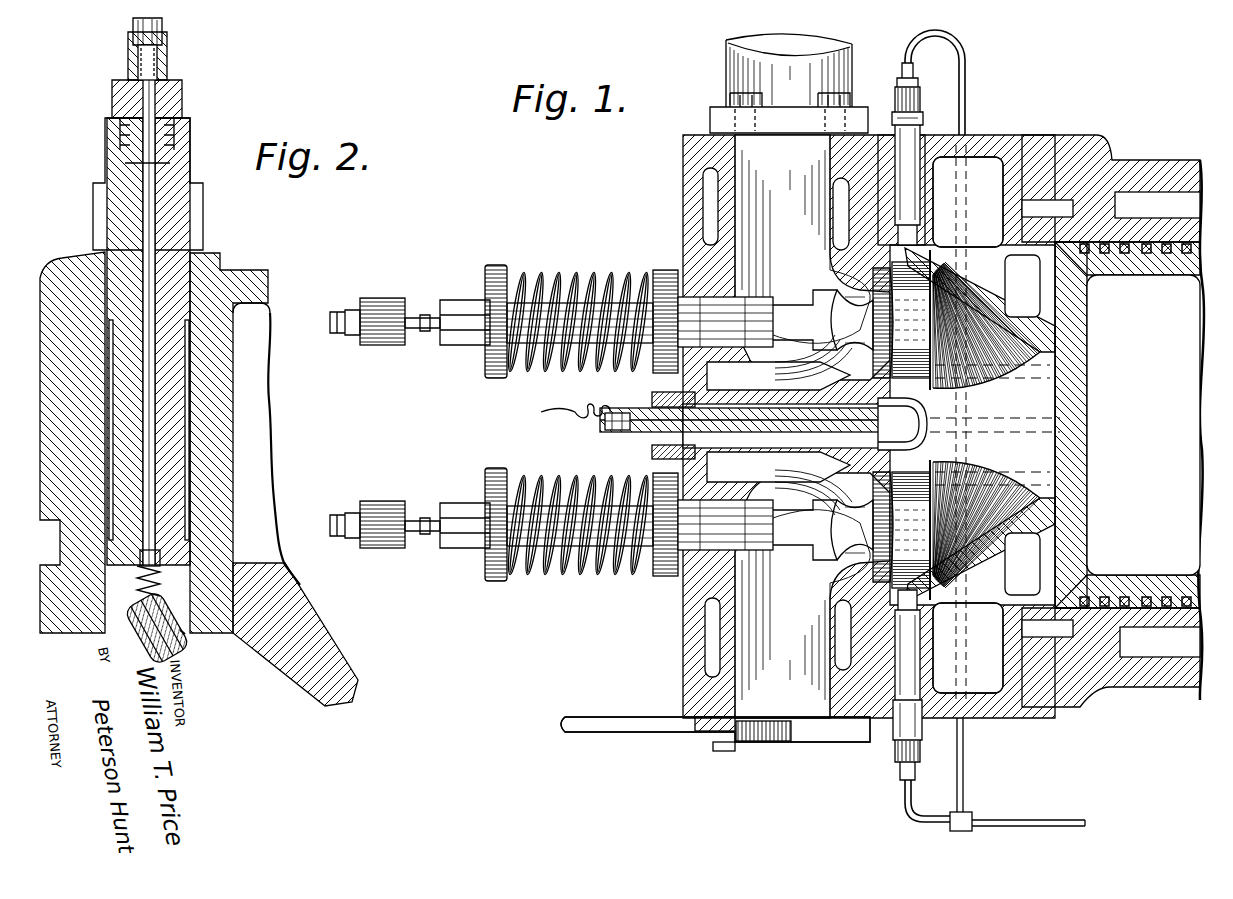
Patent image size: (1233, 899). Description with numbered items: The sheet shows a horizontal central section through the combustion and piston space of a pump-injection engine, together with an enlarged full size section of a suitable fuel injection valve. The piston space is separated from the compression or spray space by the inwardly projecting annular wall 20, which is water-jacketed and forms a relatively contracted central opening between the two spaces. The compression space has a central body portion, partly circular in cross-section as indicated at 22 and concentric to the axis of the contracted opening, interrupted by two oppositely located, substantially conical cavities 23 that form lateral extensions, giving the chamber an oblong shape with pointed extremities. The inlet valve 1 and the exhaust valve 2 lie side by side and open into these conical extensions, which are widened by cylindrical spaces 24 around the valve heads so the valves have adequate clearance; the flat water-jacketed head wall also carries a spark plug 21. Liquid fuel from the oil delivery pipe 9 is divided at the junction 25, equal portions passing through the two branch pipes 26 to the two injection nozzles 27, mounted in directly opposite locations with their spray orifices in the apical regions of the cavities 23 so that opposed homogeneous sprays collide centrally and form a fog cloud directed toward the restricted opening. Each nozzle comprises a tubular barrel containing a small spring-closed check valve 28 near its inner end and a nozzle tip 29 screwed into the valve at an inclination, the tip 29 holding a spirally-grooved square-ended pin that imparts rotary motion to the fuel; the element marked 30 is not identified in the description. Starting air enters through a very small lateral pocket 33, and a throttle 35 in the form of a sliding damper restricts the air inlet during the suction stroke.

In FIG. 1, the inlet valve 1 is at (657, 575).
In FIG. 1, the exhaust valve 2 is at (590, 275).
In FIG. 1, the oil delivery pipe 9 is at (1065, 820).
In FIG. 1, the inwardly projecting annular wall 20 is at (1050, 490).
In FIG. 1, the spark plug 21 is at (630, 422).
In FIG. 1, the central or body portion of the compression space 22 is at (1020, 415).
In FIG. 1, the conical cavities 23 is at (955, 268).
In FIG. 1, the cylindrical spaces 24 is at (845, 292).
In FIG. 1, the junction 25 is at (968, 812).
In FIG. 2, the branch pipes 26 is at (162, 25).
In FIG. 1, the branch pipes 26 is at (966, 75).
In FIG. 2, the injection nozzles 27 is at (190, 215).
In FIG. 1, the injection nozzles 27 is at (925, 118).
In FIG. 2, the spring-closed check valve 28 is at (160, 560).
In FIG. 2, the nozzle tip 29 is at (183, 634).
In FIG. 1, the nozzle tip 29 is at (958, 252).
In FIG. 2, the cutter / spray head 30 is at (172, 652).
In FIG. 1, the lateral pocket 33 is at (845, 398).
In FIG. 1, the throttle 35 is at (612, 725).